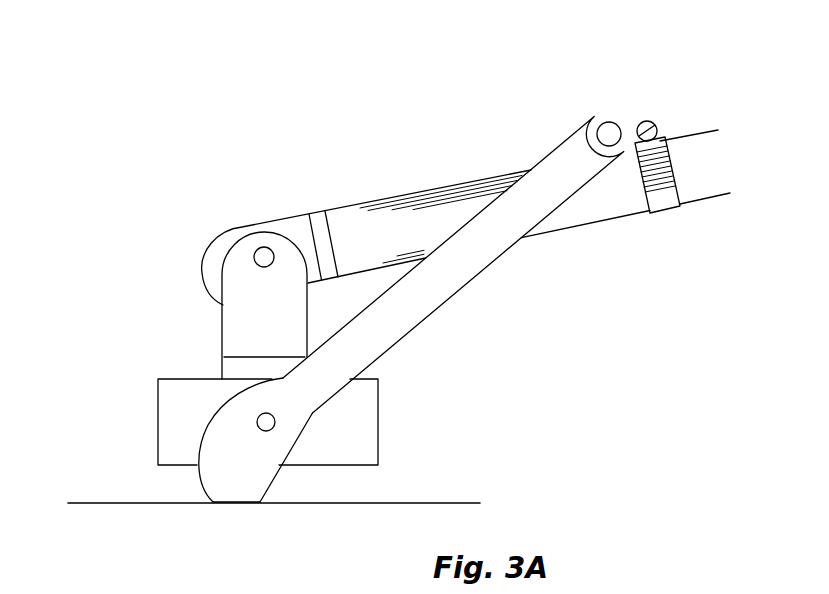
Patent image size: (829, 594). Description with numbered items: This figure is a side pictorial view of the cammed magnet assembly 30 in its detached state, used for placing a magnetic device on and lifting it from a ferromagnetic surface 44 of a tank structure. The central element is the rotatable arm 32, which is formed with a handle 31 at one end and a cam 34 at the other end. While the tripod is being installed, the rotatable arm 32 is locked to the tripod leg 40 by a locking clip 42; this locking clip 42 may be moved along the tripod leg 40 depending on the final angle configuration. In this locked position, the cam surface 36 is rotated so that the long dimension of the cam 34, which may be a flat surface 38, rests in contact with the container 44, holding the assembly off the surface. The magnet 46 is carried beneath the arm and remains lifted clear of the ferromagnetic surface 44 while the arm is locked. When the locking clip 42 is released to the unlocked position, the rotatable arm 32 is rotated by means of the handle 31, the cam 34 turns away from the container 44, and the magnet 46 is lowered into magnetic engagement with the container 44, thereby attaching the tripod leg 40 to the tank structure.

The cammed magnet assembly 30 is at (121, 226).
The handle 31 is at (622, 118).
The rotatable arm 32 is at (448, 280).
The cam 34 is at (270, 450).
The cam surface 36 is at (197, 472).
The flat surface 38 is at (233, 505).
The tripod leg 40 is at (368, 215).
The locking clip 42 is at (678, 116).
The ferromagnetic surface 44 is at (147, 505).
The magnet 46 is at (178, 385).